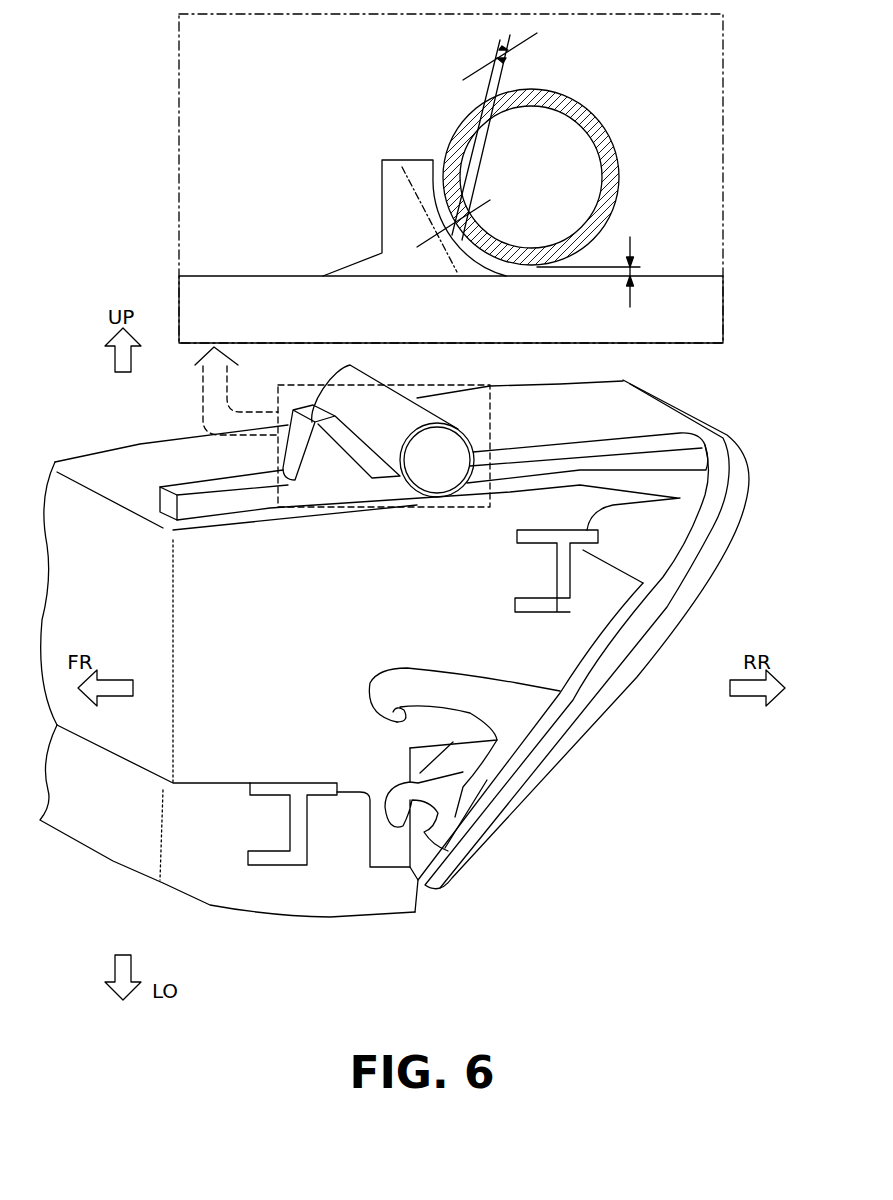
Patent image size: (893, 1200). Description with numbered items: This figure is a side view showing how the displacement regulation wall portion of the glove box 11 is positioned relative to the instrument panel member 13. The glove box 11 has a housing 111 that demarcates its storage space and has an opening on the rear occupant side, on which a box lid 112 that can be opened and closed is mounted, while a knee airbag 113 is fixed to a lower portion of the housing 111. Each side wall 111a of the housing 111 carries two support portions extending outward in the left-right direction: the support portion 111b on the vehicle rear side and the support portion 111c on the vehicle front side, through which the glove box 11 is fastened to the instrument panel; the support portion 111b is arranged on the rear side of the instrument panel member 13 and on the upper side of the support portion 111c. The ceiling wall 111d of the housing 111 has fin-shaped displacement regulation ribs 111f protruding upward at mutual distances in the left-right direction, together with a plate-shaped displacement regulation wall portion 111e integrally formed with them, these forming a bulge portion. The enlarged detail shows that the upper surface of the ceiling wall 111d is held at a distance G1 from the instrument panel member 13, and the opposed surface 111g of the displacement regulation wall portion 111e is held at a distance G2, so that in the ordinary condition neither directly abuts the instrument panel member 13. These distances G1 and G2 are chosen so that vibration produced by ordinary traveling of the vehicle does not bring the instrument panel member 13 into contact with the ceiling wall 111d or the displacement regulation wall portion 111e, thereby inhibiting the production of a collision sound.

The glove box 11 is at (735, 430).
The instrument panel member 13 is at (582, 108).
The housing 111 is at (190, 568).
The side wall 111a is at (223, 731).
The support portion 111b is at (583, 586).
The support portion 111c is at (316, 832).
The ceiling wall 111d is at (246, 266).
The displacement regulation wall portion 111e is at (402, 163).
The displacement regulation rib 111f is at (375, 213).
The opposed surface 111g is at (475, 241).
The box lid 112 is at (625, 700).
The knee airbag 113 is at (212, 903).
The distance G1 is at (601, 272).
The distance G2 is at (494, 136).